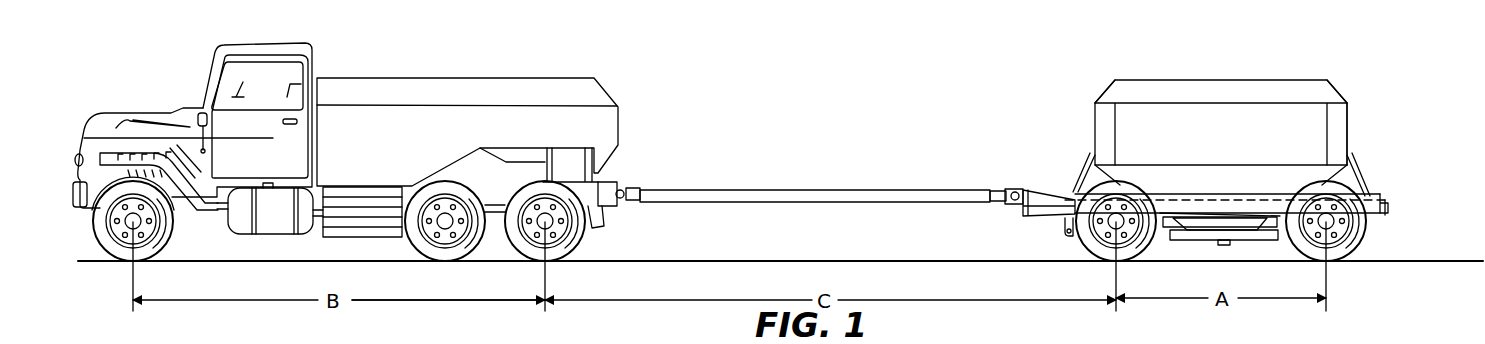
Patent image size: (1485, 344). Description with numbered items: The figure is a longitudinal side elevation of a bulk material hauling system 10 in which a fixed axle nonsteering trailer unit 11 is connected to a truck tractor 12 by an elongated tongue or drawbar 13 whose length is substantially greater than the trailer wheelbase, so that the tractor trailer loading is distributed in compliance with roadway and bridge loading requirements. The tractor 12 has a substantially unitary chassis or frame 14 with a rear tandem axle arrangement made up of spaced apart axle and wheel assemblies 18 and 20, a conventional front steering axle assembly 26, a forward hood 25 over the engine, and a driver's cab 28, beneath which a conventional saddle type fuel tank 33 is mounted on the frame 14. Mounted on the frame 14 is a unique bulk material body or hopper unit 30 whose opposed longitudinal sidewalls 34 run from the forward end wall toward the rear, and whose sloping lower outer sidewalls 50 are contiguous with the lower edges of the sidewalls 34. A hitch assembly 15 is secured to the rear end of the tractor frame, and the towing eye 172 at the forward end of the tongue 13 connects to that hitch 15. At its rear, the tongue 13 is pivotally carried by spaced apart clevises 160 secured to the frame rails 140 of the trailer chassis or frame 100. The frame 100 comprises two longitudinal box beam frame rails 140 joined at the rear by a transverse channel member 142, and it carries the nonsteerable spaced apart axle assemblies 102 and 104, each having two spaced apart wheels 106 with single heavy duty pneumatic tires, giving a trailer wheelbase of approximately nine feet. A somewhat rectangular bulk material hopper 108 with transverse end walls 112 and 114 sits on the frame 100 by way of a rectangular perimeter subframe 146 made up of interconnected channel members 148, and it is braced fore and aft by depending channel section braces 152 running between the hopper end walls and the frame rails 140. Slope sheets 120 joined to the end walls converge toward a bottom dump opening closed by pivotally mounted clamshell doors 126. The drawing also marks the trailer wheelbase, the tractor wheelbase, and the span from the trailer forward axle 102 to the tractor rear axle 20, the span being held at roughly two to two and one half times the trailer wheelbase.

The bulk material hauling system 10 is at (893, 100).
The trailer unit 11 is at (1237, 78).
The truck tractor 12 is at (470, 78).
The drawbar 13 is at (882, 190).
The frame 14 is at (600, 193).
The hitch assembly 15 is at (622, 200).
The axle and wheel assembly 18 is at (443, 253).
The axle and wheel assembly 20 is at (565, 252).
The forward hood 25 is at (148, 107).
The front steering axle assembly 26 is at (140, 252).
The driver's cab 28 is at (310, 44).
The hopper unit 30 is at (548, 90).
The fuel tank 33 is at (280, 238).
The sidewall 34 is at (414, 140).
The sloping lower outer sidewall 50 is at (367, 230).
The frame 100 is at (1232, 200).
The axle assembly 102 is at (1090, 235).
The axle assembly 104 is at (1340, 245).
The wheel 106 is at (1124, 193).
The bulk material hopper 108 is at (1340, 118).
The transverse end wall 112 is at (1095, 115).
The transverse end wall 114 is at (1350, 128).
The slope sheet 120 is at (1092, 176).
The clamshell door 126 is at (1265, 243).
The frame rail 140 is at (1254, 210).
The transverse channel member 142 is at (1386, 214).
The perimeter subframe 146 is at (1183, 200).
The channel member 148 is at (1200, 240).
The depending channel section brace 152 is at (1083, 182).
The clevis 160 is at (1008, 204).
The towing eye 172 is at (626, 190).